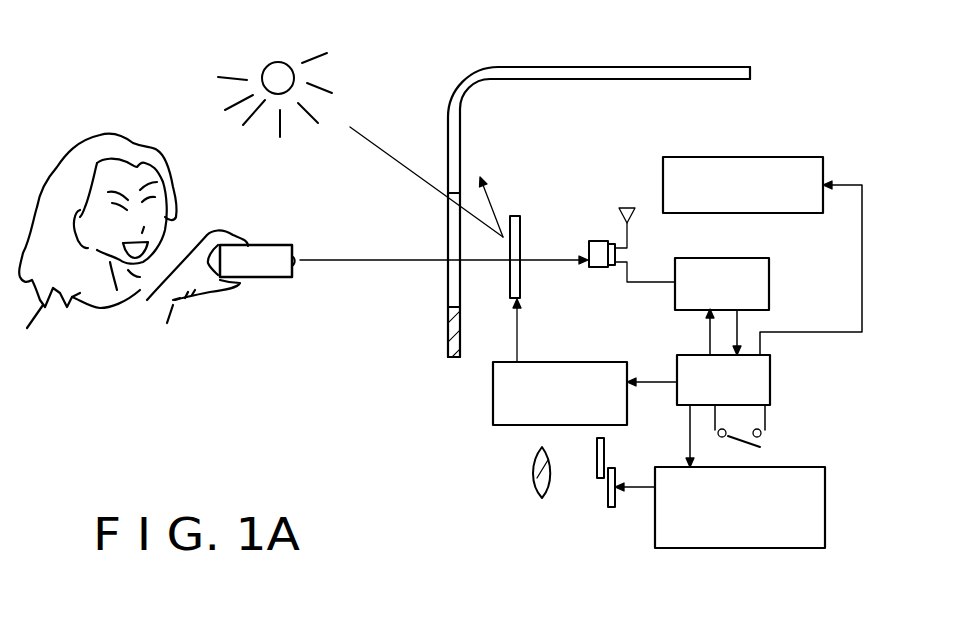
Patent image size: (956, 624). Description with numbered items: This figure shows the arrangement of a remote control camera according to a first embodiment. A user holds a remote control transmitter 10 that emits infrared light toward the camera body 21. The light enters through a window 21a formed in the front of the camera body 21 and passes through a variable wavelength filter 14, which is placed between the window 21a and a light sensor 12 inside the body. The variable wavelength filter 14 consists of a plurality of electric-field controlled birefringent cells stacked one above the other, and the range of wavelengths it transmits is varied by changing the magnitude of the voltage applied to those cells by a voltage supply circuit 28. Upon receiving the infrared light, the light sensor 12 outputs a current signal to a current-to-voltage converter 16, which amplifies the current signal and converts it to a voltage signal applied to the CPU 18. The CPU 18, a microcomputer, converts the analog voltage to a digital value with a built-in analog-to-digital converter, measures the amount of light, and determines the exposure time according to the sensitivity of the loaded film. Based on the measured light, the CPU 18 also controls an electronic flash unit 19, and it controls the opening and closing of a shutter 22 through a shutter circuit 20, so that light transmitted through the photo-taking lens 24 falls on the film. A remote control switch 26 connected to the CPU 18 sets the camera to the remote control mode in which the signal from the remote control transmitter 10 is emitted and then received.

The remote control transmitter 10 is at (290, 278).
The light sensor 12 is at (600, 241).
The variable wavelength filter 14 is at (519, 216).
The current-to-voltage converter 16 is at (769, 290).
The CPU 18 is at (770, 387).
The electronic flash unit 19 is at (792, 157).
The shutter circuit 20 is at (805, 548).
The camera body 21 is at (633, 67).
The window 21a is at (448, 281).
The shutter 22 is at (607, 490).
The photo-taking lens 24 is at (530, 478).
The remote control switch 26 is at (765, 442).
The voltage supply circuit 28 is at (573, 362).